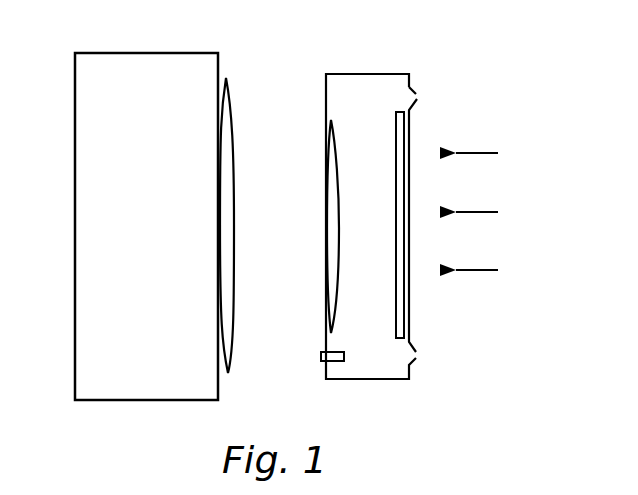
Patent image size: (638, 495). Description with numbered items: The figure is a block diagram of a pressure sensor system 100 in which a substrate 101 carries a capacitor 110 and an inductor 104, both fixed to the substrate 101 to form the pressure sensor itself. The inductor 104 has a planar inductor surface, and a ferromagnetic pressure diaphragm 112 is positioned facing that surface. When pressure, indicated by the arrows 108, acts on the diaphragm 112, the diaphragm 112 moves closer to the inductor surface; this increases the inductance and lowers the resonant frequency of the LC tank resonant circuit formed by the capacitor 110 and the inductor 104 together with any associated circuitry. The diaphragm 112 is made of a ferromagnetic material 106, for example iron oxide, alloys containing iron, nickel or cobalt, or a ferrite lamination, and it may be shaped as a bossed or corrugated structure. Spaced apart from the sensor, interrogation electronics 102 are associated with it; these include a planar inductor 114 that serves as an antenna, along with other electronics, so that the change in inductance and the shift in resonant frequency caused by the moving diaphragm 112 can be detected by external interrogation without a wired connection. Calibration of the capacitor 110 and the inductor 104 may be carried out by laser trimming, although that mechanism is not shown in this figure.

The pressure sensor system 100 is at (543, 78).
The substrate 101 is at (384, 74).
The interrogation electronics 102 is at (75, 168).
The inductor 104 is at (326, 168).
The ferromagnetic material 106 is at (396, 148).
The arrows indicating pressure 108 is at (498, 287).
The capacitor 110 is at (321, 355).
The ferromagnetic pressure diaphragm 112 is at (403, 352).
The planar inductor 114 is at (235, 242).